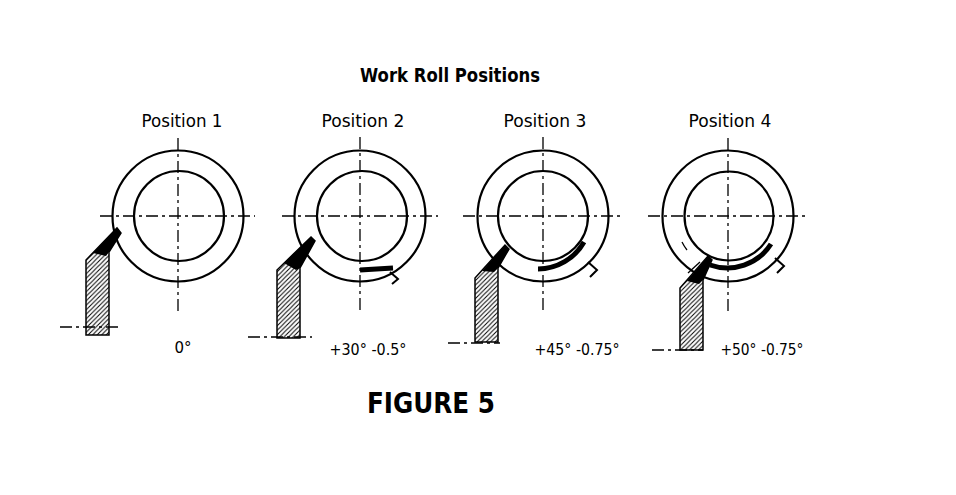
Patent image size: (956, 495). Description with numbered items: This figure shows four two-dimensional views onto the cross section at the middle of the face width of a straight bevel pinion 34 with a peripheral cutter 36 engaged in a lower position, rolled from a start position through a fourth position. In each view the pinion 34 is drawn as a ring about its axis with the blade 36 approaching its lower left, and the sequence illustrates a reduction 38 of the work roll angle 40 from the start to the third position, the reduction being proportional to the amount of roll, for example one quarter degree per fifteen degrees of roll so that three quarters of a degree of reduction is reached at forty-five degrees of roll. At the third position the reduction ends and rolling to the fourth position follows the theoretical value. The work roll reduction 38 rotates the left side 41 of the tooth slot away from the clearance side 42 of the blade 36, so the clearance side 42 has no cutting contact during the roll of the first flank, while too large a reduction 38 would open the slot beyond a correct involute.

The straight bevel pinion 34 is at (210, 170).
The peripheral cutter 36 is at (108, 292).
The work roll reduction 38 is at (395, 283).
The work roll angle 40 is at (378, 272).
The left side of the tooth slot 41 is at (687, 250).
The clearance side of the blade 42 is at (688, 273).